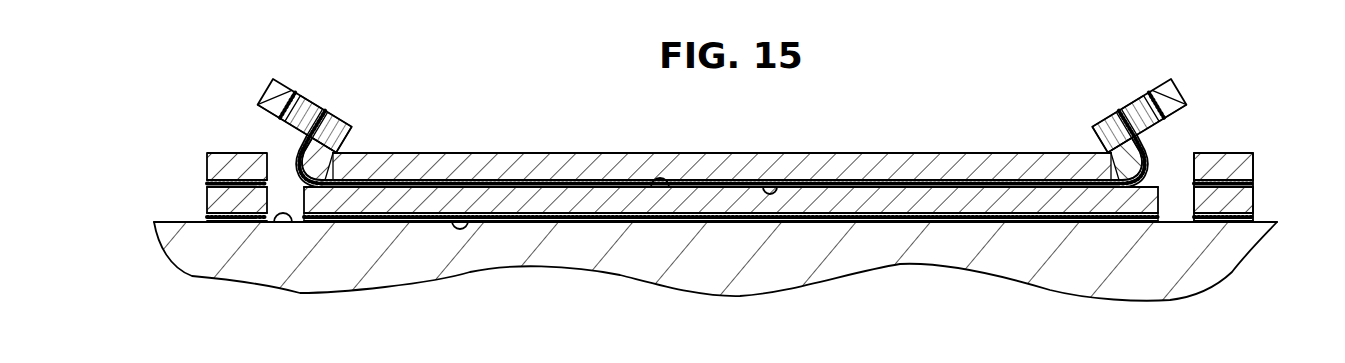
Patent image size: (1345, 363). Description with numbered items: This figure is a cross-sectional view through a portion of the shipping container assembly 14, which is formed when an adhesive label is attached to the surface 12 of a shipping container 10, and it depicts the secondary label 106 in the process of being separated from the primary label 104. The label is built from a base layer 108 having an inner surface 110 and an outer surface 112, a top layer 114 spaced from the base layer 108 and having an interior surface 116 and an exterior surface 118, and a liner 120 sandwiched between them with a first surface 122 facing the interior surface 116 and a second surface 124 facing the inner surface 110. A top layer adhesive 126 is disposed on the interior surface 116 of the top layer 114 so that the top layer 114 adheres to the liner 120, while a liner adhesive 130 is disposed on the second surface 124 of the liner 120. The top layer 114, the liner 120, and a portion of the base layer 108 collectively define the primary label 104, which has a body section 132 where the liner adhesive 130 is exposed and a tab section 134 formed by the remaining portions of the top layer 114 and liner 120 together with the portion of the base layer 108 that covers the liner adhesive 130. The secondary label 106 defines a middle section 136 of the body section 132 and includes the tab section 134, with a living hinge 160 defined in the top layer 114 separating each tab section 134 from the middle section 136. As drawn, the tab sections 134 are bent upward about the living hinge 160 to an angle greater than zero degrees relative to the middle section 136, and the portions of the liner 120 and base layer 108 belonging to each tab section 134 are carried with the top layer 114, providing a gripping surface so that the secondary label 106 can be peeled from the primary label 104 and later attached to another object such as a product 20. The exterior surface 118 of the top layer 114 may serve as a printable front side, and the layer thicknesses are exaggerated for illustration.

The shipping container 10 is at (1200, 283).
The surface 12 is at (283, 222).
The shipping container assembly 14 is at (1257, 92).
The product 20 is at (175, 222).
The primary label 104 is at (420, 224).
The secondary label 106 is at (808, 150).
The base layer 108 is at (293, 97).
The inner surface 110 is at (274, 133).
The outer surface 112 is at (267, 90).
The top layer 114 is at (207, 167).
The interior surface 116 is at (763, 186).
The exterior surface 118 is at (848, 158).
The liner 120 is at (207, 200).
The first surface 122 is at (320, 128).
The second surface 124 is at (282, 105).
The top layer adhesive 126 is at (840, 188).
The liner adhesive 130 is at (300, 118).
The body section 132 is at (1207, 153).
The tab section 134 is at (343, 130).
The middle section 136 is at (541, 160).
The living hinge 160 is at (372, 152).